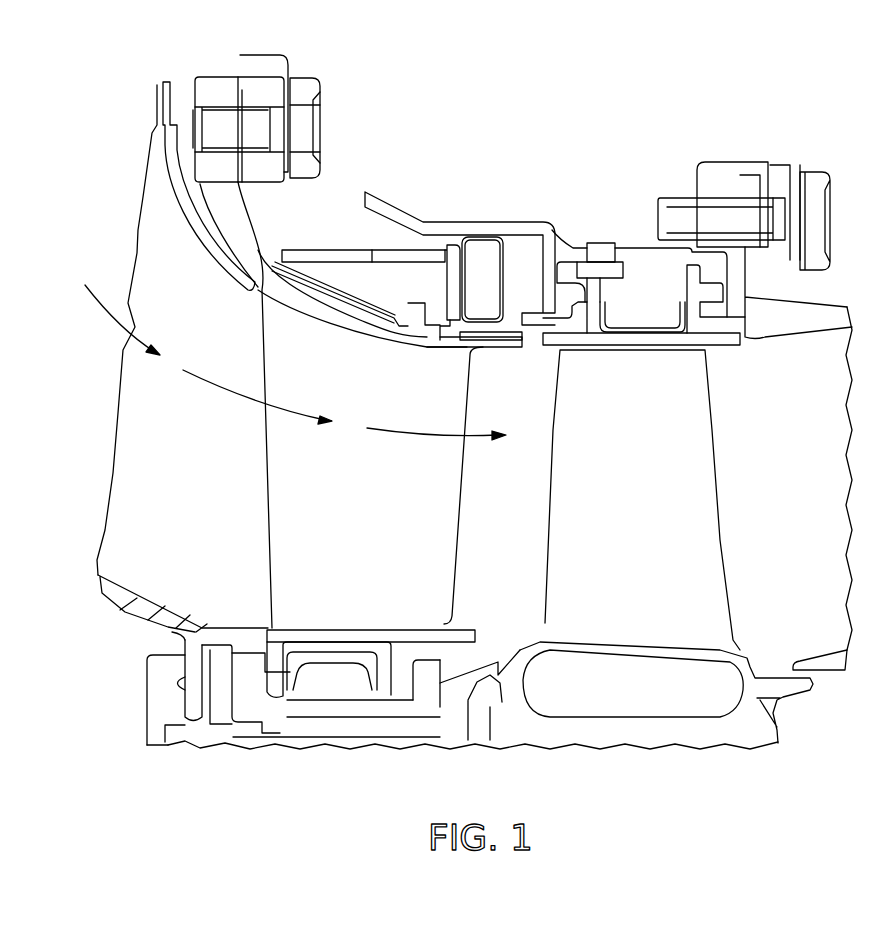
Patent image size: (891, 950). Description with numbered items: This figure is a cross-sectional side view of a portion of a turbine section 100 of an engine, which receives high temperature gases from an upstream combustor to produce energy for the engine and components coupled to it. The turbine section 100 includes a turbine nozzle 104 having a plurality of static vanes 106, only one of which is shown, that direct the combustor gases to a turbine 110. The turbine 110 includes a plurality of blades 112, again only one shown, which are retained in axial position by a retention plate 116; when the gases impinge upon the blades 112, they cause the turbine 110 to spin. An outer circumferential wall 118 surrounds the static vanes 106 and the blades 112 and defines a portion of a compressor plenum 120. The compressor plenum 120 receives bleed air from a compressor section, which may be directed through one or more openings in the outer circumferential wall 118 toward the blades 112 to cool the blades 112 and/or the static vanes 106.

The turbine section 100 is at (590, 107).
The turbine nozzle 104 is at (258, 498).
The static vanes 106 is at (330, 603).
The turbine 110 is at (710, 725).
The blades 112 is at (655, 468).
The retention plate 116 is at (455, 705).
The outer circumferential wall 118 is at (498, 348).
The compressor plenum 120 is at (359, 201).